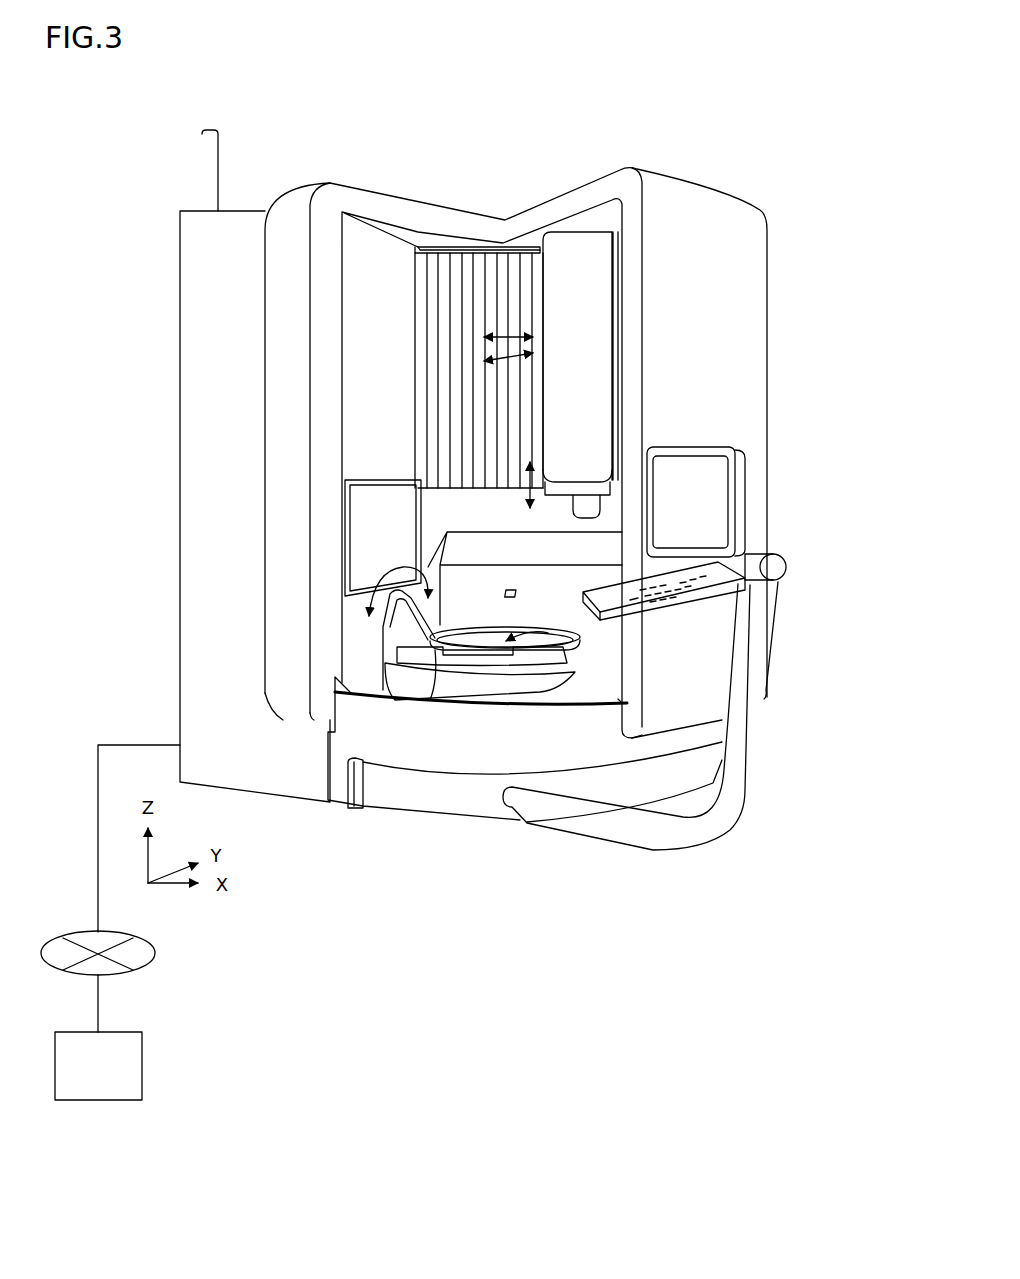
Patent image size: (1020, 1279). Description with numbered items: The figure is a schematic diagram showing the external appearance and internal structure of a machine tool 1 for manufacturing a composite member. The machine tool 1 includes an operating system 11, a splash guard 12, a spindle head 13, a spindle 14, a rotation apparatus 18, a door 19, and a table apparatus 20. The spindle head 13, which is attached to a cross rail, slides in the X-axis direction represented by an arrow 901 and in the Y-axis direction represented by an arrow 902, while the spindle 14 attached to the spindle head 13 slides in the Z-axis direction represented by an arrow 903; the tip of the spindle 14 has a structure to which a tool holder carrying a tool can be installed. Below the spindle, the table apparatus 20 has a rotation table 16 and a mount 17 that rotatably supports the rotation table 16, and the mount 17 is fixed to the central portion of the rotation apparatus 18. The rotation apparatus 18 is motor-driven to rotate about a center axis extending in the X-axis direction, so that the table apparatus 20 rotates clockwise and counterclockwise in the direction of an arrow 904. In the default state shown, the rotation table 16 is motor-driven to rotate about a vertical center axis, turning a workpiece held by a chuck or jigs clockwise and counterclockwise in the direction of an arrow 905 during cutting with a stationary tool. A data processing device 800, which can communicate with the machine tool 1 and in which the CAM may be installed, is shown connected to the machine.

The machine tool 1 is at (781, 110).
The operating system 11 is at (697, 577).
The splash guard 12 is at (685, 202).
The spindle head 13 is at (592, 370).
The spindle 14 is at (607, 487).
The rotation table 16 is at (478, 640).
The mount 17 is at (437, 660).
The rotation apparatus 18 is at (390, 660).
The door 19 is at (375, 517).
The table apparatus 20 is at (482, 770).
The data processing device 800 is at (145, 1068).
The arrow 901 is at (497, 333).
The arrow 902 is at (537, 370).
The arrow 903 is at (522, 470).
The arrow 904 is at (380, 567).
The arrow 905 is at (547, 642).